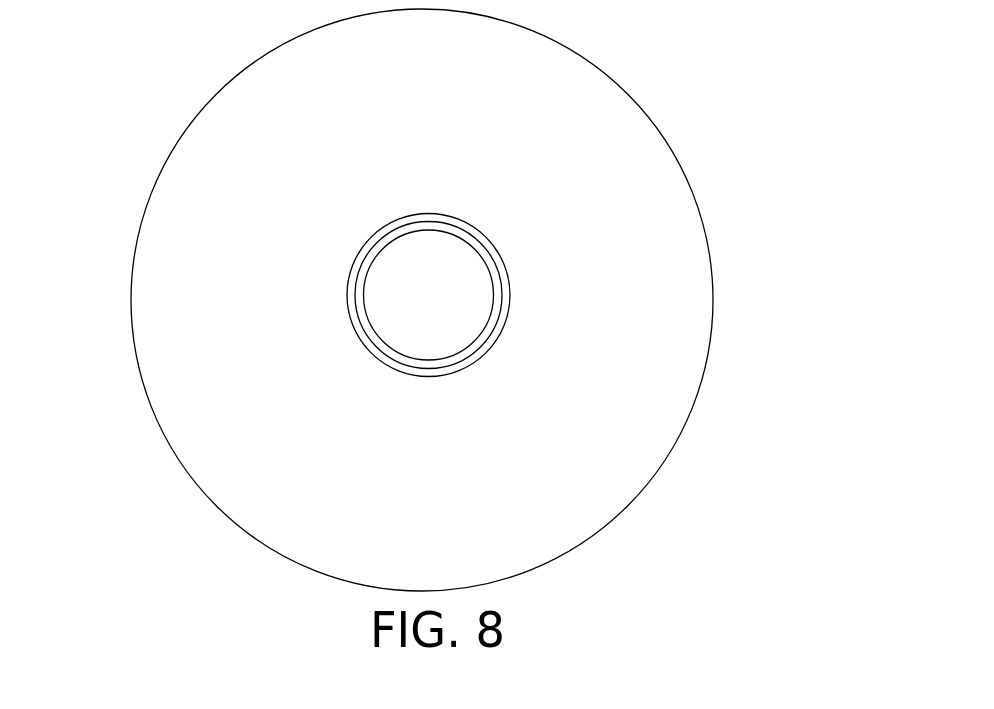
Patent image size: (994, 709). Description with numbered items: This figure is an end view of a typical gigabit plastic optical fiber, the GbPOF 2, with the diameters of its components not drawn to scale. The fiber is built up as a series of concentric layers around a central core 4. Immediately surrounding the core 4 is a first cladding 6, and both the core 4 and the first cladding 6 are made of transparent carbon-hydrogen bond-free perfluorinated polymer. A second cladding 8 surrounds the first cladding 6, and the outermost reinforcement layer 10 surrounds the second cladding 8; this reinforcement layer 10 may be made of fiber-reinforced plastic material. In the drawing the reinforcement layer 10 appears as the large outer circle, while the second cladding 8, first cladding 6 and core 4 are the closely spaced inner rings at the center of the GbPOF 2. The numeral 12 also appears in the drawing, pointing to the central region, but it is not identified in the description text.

The GbPOF 2 is at (436, 300).
The core 4 is at (474, 248).
The first cladding 6 is at (478, 351).
The second cladding 8 is at (346, 293).
The reinforcement layer 10 is at (211, 98).
The central opening 12 is at (587, 258).